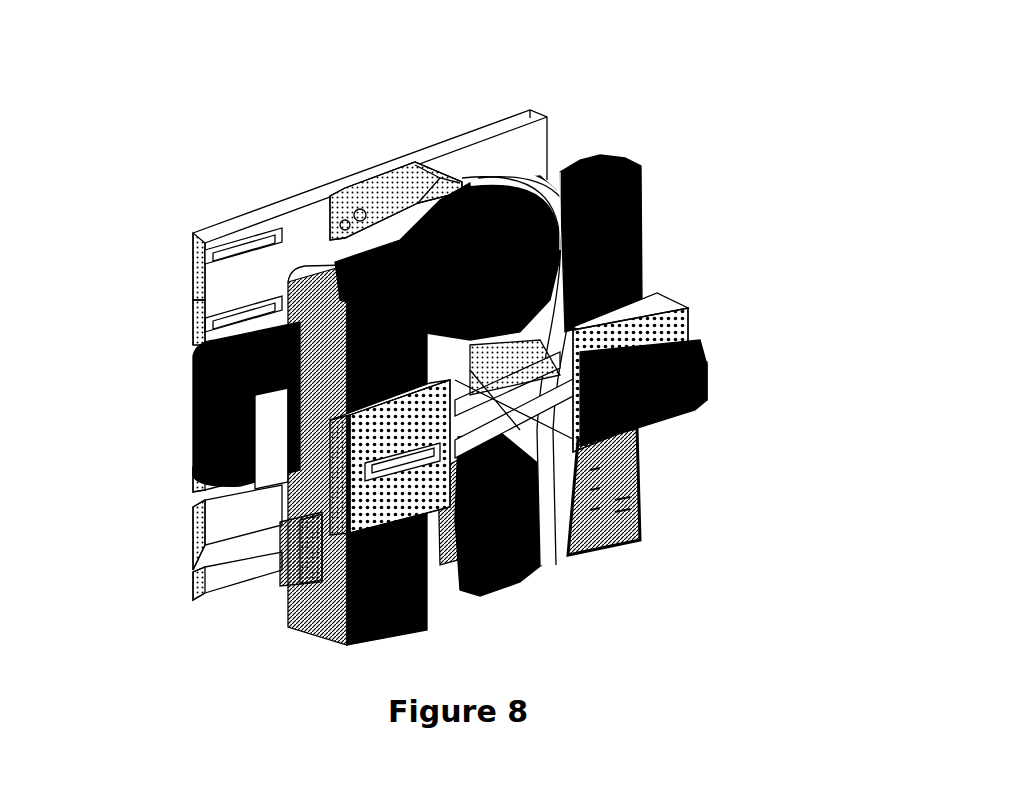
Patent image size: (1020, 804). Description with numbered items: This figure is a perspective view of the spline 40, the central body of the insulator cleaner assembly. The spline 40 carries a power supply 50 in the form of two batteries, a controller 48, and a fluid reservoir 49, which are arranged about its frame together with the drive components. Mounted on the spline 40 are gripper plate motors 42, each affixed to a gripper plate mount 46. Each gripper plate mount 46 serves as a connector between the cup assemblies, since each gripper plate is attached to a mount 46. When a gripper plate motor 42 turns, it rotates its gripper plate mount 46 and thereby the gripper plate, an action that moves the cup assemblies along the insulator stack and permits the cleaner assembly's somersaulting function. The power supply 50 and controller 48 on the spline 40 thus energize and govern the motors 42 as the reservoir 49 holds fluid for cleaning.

The spline 40 is at (683, 170).
The gripper plate motor 42 is at (453, 183).
The gripper plate mount 46 is at (236, 282).
The controller 48 is at (703, 390).
The fluid reservoir 49 is at (232, 411).
The power supply 50 is at (295, 630).